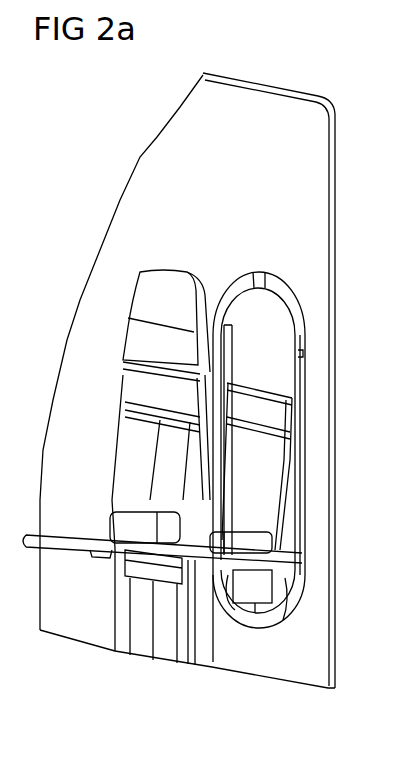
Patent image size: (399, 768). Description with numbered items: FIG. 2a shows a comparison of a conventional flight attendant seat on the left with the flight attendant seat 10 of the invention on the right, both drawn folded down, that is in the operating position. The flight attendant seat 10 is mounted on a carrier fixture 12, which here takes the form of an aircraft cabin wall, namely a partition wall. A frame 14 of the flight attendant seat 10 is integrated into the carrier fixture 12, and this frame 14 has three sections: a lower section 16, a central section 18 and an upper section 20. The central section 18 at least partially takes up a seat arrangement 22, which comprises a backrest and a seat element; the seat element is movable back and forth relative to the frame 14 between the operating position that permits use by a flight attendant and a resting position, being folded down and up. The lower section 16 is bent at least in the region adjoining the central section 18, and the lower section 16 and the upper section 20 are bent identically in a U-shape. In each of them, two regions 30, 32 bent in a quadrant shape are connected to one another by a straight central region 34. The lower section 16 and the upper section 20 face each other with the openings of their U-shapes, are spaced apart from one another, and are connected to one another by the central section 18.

The flight attendant seat 10 is at (210, 255).
The carrier fixture 12 is at (314, 141).
The frame 14 is at (298, 281).
The lower section 16 is at (303, 601).
The central section 18 is at (304, 545).
The upper section 20 is at (305, 329).
The seat arrangement 22 is at (272, 477).
The region bent in a quadrant shape 30 is at (235, 610).
The region bent in a quadrant shape 32 is at (283, 622).
The straight central region 34 is at (258, 613).